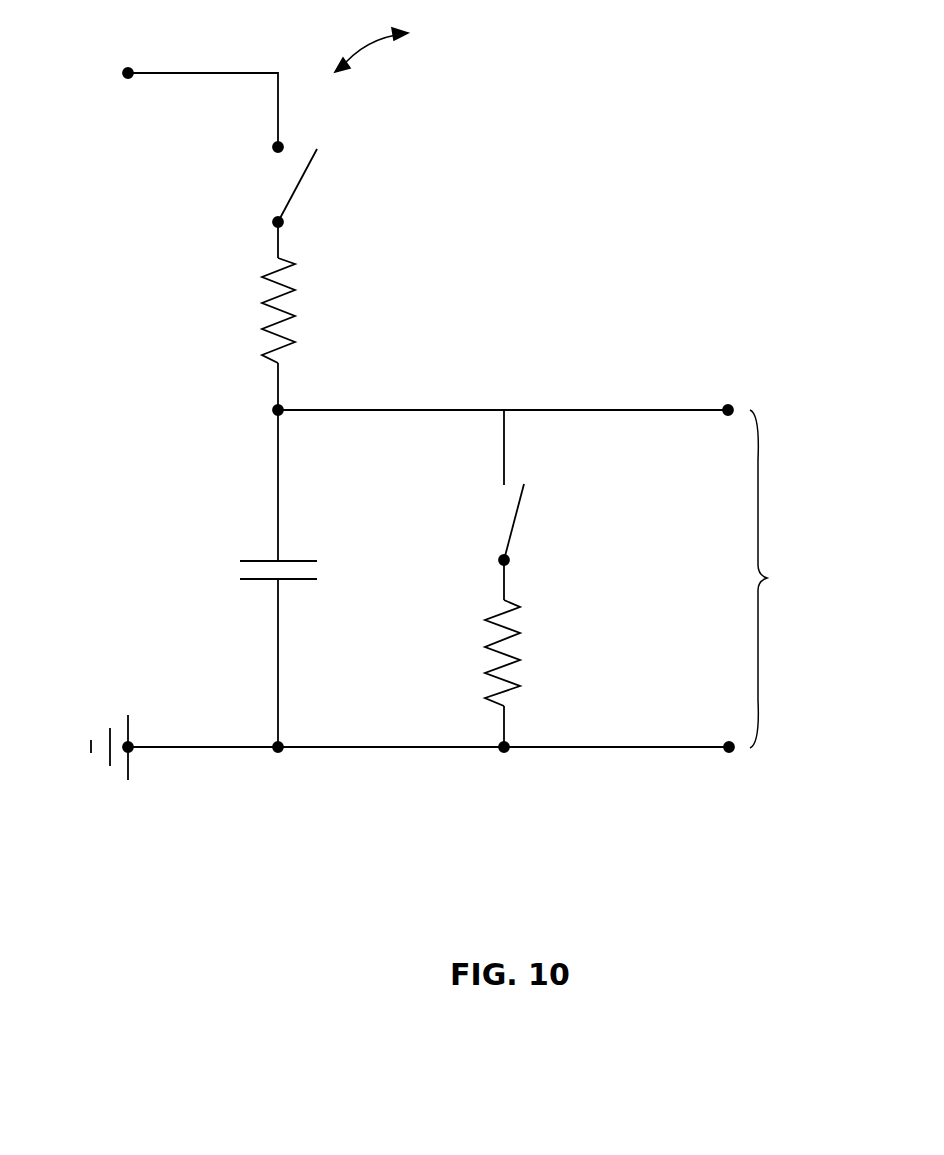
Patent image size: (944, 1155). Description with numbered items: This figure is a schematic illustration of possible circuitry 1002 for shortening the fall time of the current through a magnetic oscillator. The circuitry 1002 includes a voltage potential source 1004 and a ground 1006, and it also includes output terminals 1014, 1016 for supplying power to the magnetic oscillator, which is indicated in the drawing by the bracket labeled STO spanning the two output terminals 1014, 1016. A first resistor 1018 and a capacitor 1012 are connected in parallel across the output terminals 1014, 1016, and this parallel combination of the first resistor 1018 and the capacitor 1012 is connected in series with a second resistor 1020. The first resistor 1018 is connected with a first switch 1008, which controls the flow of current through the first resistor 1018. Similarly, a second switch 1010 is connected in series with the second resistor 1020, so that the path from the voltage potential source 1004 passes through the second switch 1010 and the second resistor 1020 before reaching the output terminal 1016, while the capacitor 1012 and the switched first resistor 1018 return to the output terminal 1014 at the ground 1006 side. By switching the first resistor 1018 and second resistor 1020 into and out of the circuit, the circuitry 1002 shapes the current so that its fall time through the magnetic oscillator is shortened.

The circuitry 1002 is at (404, 48).
The voltage potential source 1004 is at (128, 70).
The ground 1006 is at (130, 770).
The first switch 1008 is at (510, 535).
The second switch 1010 is at (295, 190).
The capacitor 1012 is at (297, 561).
The output terminal 1014 is at (756, 767).
The output terminal 1016 is at (729, 406).
The first resistor 1018 is at (516, 607).
The second resistor 1020 is at (296, 297).
The storage element STO is at (760, 457).